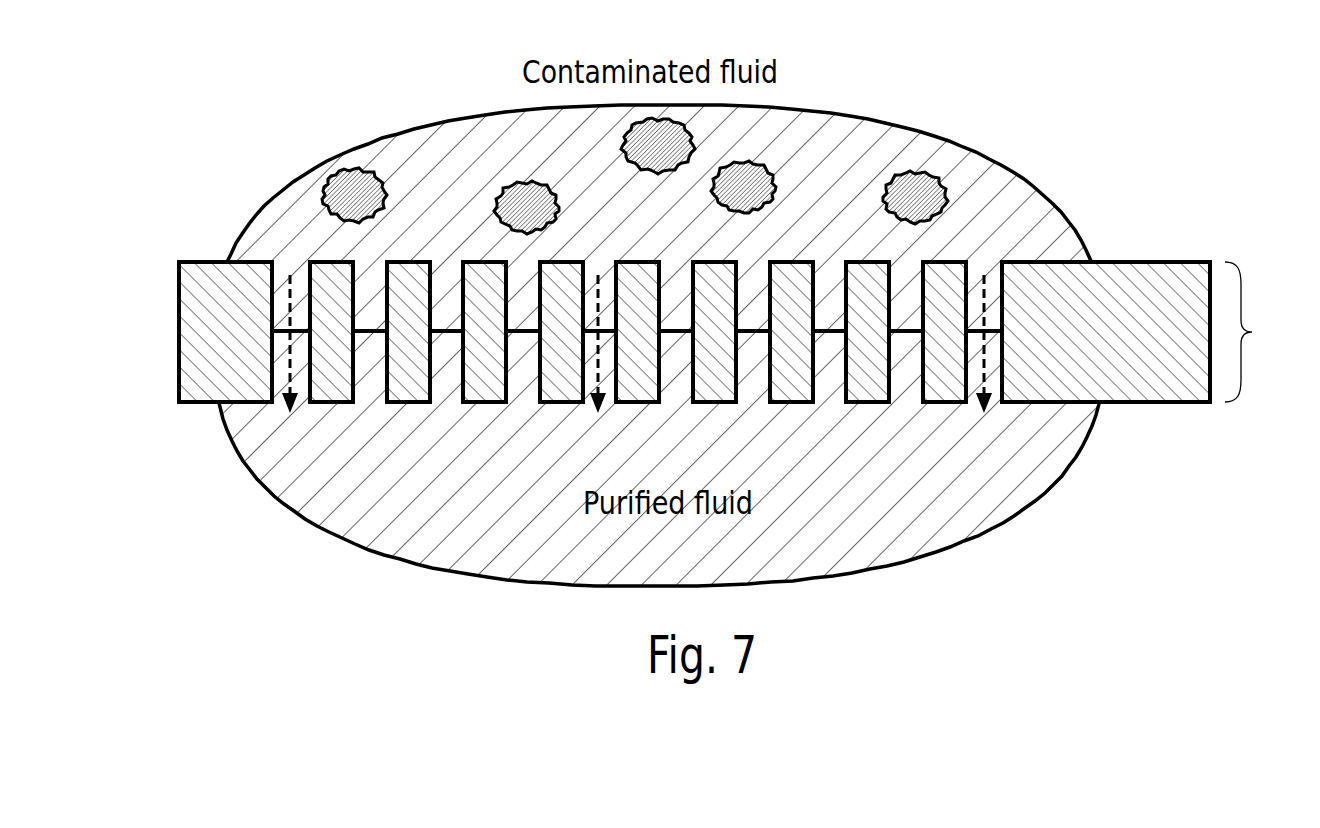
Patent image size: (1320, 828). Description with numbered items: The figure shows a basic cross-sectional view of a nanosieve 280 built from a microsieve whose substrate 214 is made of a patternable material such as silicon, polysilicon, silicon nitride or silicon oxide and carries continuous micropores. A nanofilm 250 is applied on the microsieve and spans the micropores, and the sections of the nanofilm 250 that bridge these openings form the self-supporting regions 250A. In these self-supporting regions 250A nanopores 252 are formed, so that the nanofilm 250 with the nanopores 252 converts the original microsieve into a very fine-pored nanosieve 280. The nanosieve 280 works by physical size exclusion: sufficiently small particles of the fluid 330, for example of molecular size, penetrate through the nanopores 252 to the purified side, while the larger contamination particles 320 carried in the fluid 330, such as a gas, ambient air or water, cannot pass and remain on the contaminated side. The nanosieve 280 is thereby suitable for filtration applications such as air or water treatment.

The substrate 214 is at (1264, 332).
The nanofilm 250 is at (698, 347).
The self-supporting regions of the nanofilm 250A is at (827, 352).
The nanopores 252 is at (526, 352).
The nanosieve 280 is at (202, 234).
The contamination particles 320 is at (914, 190).
The fluid 330 is at (1032, 223).